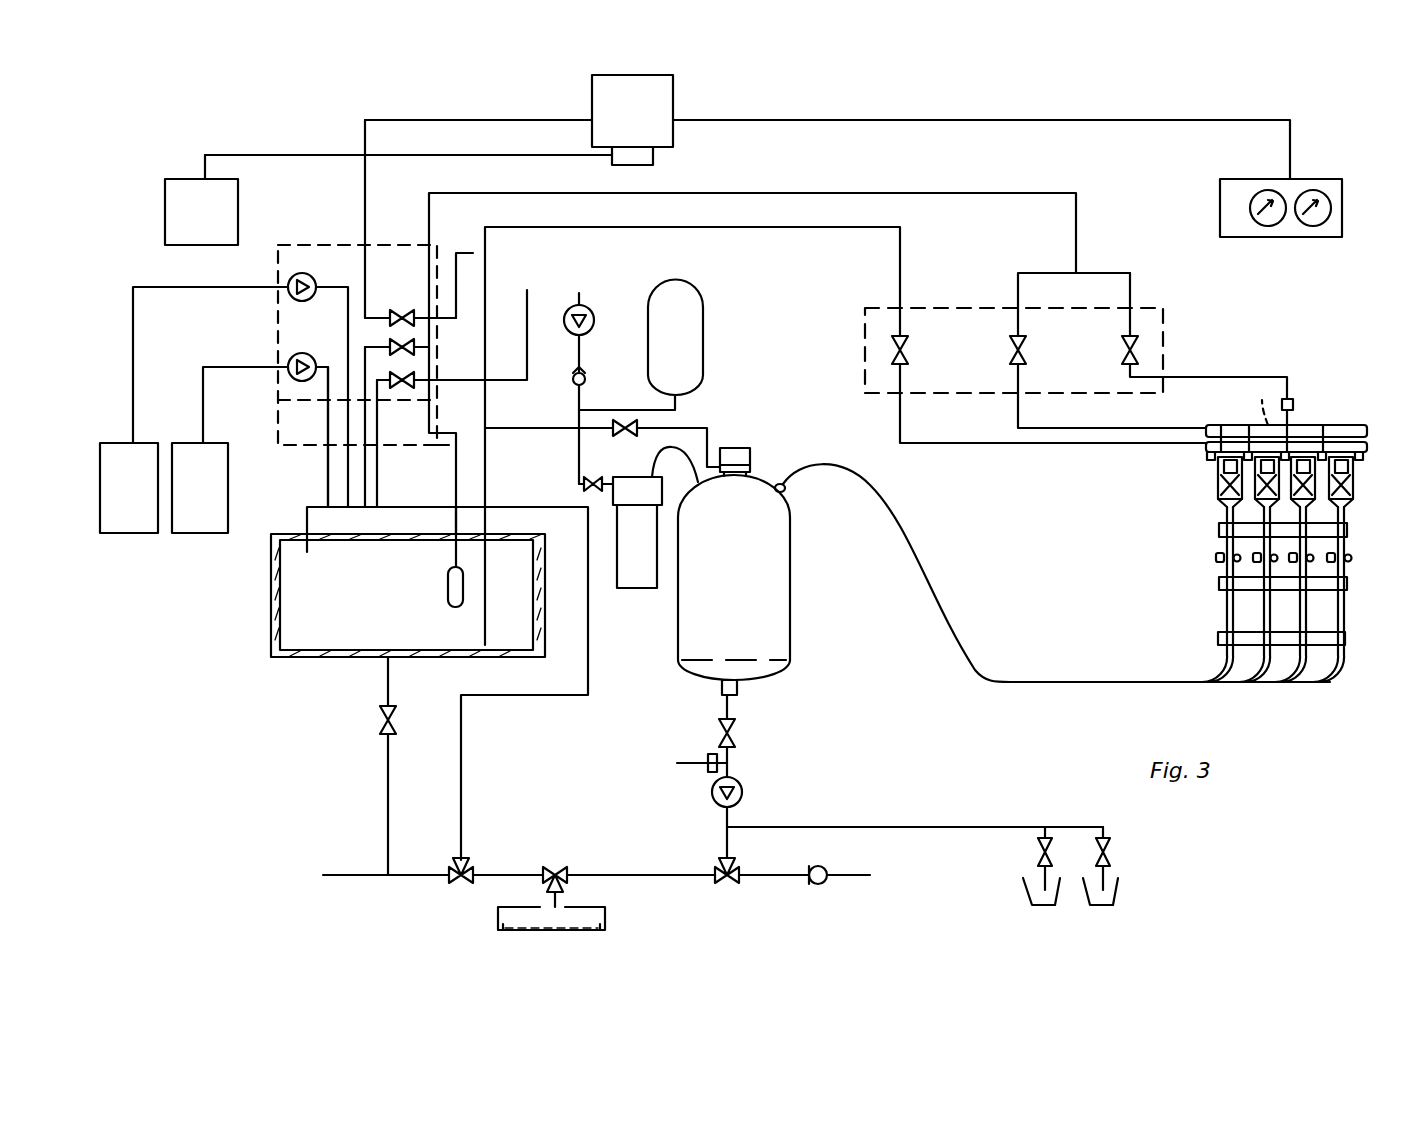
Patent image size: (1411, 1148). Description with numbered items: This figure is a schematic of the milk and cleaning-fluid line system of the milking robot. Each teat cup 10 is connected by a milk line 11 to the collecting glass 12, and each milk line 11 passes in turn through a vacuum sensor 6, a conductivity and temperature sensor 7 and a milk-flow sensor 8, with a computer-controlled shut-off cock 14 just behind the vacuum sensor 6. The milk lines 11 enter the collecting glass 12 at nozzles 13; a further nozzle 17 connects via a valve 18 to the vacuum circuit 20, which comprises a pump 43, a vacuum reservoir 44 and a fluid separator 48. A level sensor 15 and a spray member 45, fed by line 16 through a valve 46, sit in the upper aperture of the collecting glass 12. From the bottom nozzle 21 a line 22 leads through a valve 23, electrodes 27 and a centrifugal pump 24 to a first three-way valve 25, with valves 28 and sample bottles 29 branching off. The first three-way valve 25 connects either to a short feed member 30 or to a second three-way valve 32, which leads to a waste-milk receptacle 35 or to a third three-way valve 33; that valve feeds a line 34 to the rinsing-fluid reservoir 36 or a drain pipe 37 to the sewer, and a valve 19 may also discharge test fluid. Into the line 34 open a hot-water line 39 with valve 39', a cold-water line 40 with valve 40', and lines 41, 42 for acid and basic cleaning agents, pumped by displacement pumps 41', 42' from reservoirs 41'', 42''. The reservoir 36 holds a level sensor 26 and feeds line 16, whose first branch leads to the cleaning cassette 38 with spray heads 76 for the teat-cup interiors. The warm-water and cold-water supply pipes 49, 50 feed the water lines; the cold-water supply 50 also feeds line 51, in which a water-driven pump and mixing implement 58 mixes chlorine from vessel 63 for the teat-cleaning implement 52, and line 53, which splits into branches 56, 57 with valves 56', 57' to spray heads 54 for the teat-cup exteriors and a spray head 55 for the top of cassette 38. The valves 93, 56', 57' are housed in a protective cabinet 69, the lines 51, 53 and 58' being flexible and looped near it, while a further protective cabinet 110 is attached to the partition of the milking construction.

The vacuum sensor 6 is at (1219, 530).
The conductivity and temperature sensor 7 is at (1219, 584).
The milk flow sensor 8 is at (1218, 638).
The teat cup 10 is at (1215, 487).
The milk line 11 is at (1330, 662).
The collecting glass 12 is at (790, 622).
The nozzles 13 is at (786, 482).
The shut-off valve or cock 14 is at (1352, 560).
The sensor 15 is at (745, 448).
The line 16 is at (485, 242).
The further nozzle 17 is at (675, 477).
The valve 18 is at (575, 490).
The valve 19 is at (378, 730).
The vacuum circuit 20 is at (616, 364).
The nozzle 21 is at (738, 688).
The line 22 is at (727, 705).
The valve 23 is at (737, 740).
The fluid pump 24 is at (742, 790).
The first three-way valve 25 is at (733, 892).
The level sensor 26 is at (447, 596).
The electrodes 27 is at (677, 768).
The valves 28 is at (1074, 858).
The sample bottles 29 is at (1045, 905).
The feed member 30 is at (832, 888).
The second three-way valve 32 is at (560, 862).
The third three-way valve 33 is at (448, 885).
The line 34 is at (461, 810).
The drip tray 35 is at (606, 918).
The reservoir 36 is at (271, 640).
The drain pipe 37 is at (345, 875).
The cleaning cassette 38 is at (1340, 425).
The hot-water supply line 39 is at (405, 443).
The valve 39' is at (424, 391).
The cold water line 40 is at (399, 427).
The valve 40' is at (420, 336).
The drain pipe for acid cleaning agent 41 is at (447, 683).
The displacement pump 41' is at (240, 383).
The reservoir 41'' is at (129, 514).
The drain pipe for basic cleaning agent 42 is at (298, 437).
The displacement pump 42' is at (265, 419).
The reservoir 42'' is at (200, 523).
The pump 43 is at (590, 305).
The vacuum reservoir 44 is at (703, 310).
The spray member 45 is at (800, 467).
The valve 46 is at (620, 440).
The fluid separator 48 is at (628, 588).
The supply pipe line 49 is at (527, 300).
The cold water supply pipe 50 is at (473, 253).
The line 51 is at (365, 186).
The cleaning implement 52 is at (1242, 179).
The line 53 is at (429, 207).
The spray heads 54 is at (1207, 456).
The spray head 55 is at (1282, 405).
The line portion 56 is at (1112, 397).
The valve 56' is at (1070, 318).
The line portion 57 is at (1208, 369).
The valve 57' is at (1169, 318).
The pump and mixing implement 58 is at (827, 127).
The line 58' is at (1000, 104).
The chlorine vessel 63 is at (240, 215).
The protective cabinet 69 is at (965, 308).
The spray heads 76 is at (1305, 425).
The valve 93 is at (909, 352).
The protective cabinet 110 is at (278, 397).